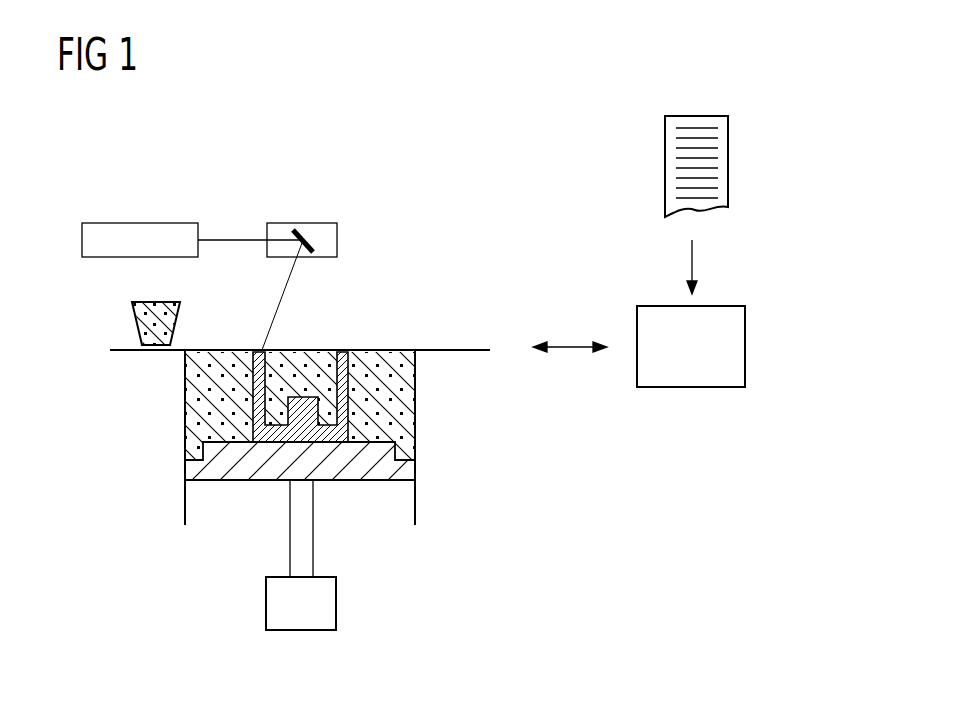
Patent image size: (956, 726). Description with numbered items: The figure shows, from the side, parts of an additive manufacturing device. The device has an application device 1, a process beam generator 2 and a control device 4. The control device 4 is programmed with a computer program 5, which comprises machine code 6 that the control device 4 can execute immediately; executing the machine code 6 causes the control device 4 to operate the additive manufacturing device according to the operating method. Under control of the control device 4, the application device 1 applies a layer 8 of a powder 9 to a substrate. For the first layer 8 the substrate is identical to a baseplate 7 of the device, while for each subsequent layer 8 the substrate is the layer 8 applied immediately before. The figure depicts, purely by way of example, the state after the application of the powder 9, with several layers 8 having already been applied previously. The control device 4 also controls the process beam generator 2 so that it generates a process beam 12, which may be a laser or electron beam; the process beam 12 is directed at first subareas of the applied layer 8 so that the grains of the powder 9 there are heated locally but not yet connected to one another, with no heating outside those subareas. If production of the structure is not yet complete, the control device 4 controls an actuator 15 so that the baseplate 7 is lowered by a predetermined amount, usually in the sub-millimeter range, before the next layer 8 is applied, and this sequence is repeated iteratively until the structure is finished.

The application device 1 is at (138, 329).
The process beam generator 2 is at (184, 179).
The control device 4 is at (745, 348).
The computer program 5 is at (730, 150).
The machine code 6 is at (680, 172).
The baseplate 7 is at (400, 470).
The layer 8 is at (387, 350).
The powder 9 is at (133, 309).
The process beam 12 is at (278, 311).
The actuator 15 is at (337, 600).